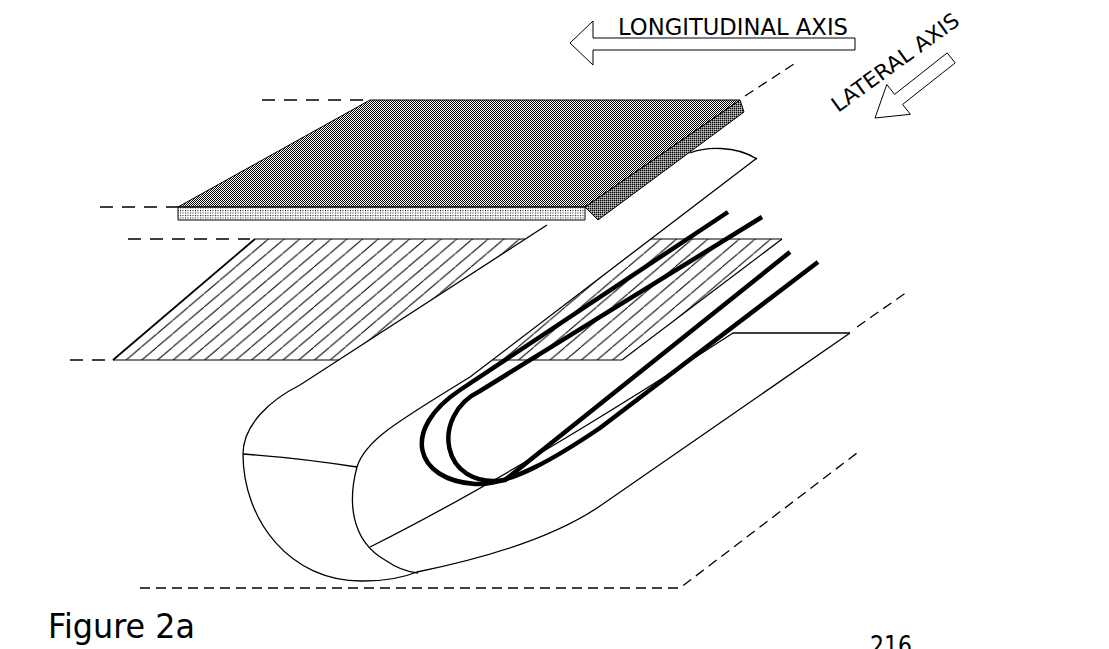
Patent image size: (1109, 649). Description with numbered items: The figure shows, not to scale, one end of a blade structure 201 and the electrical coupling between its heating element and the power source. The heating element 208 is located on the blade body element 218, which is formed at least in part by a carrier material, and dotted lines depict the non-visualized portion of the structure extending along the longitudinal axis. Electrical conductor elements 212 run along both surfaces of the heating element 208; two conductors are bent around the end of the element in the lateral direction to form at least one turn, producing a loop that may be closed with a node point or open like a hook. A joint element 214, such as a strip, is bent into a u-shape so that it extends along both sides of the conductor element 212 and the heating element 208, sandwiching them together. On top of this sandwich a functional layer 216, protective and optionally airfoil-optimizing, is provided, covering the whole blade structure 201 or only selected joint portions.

The blade structure 201 is at (126, 76).
The functional layer 216 is at (247, 175).
The joint element 214 is at (713, 158).
The electrical conductor element 212 is at (783, 253).
The heating element 208 is at (134, 340).
The blade body element 218 is at (193, 527).